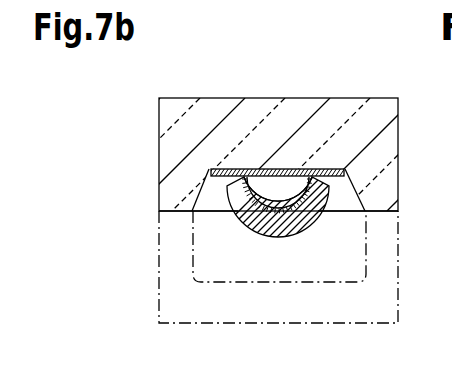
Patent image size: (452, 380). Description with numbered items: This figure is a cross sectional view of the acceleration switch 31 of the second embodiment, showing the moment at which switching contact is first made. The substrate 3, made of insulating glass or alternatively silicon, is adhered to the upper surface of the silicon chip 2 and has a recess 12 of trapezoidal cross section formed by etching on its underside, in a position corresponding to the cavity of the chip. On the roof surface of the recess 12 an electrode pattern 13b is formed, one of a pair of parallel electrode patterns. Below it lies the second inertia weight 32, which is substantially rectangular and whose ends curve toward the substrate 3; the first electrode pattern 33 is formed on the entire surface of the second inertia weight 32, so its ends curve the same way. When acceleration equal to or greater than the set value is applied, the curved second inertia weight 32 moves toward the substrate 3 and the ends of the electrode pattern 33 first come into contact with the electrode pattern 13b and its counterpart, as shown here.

The acceleration switch 31 is at (201, 78).
The substrate 3 is at (398, 129).
The recess 12 is at (209, 187).
The electrode pattern 13b is at (282, 172).
The first electrode pattern 33 is at (247, 221).
The second inertia weight 32 is at (312, 221).
The silicon chip 2 is at (398, 305).